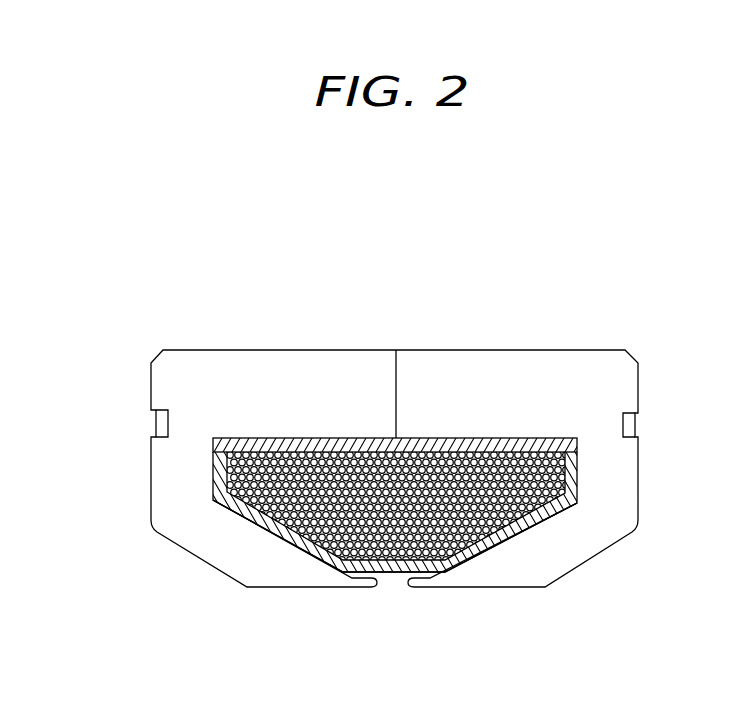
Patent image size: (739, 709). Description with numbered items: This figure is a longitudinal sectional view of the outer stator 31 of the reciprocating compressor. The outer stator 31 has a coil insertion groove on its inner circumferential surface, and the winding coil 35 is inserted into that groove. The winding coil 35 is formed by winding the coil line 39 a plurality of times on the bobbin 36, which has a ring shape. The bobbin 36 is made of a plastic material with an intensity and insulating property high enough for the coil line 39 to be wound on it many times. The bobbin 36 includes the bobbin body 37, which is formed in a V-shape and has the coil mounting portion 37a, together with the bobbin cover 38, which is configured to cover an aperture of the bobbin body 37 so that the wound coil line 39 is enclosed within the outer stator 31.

The outer stator 31 is at (145, 451).
The winding coil 35 is at (448, 273).
The bobbin 36 is at (600, 310).
The bobbin body 37 is at (577, 467).
The coil mounting portion 37a is at (503, 533).
The bobbin cover 38 is at (522, 470).
The coil line 39 is at (462, 440).